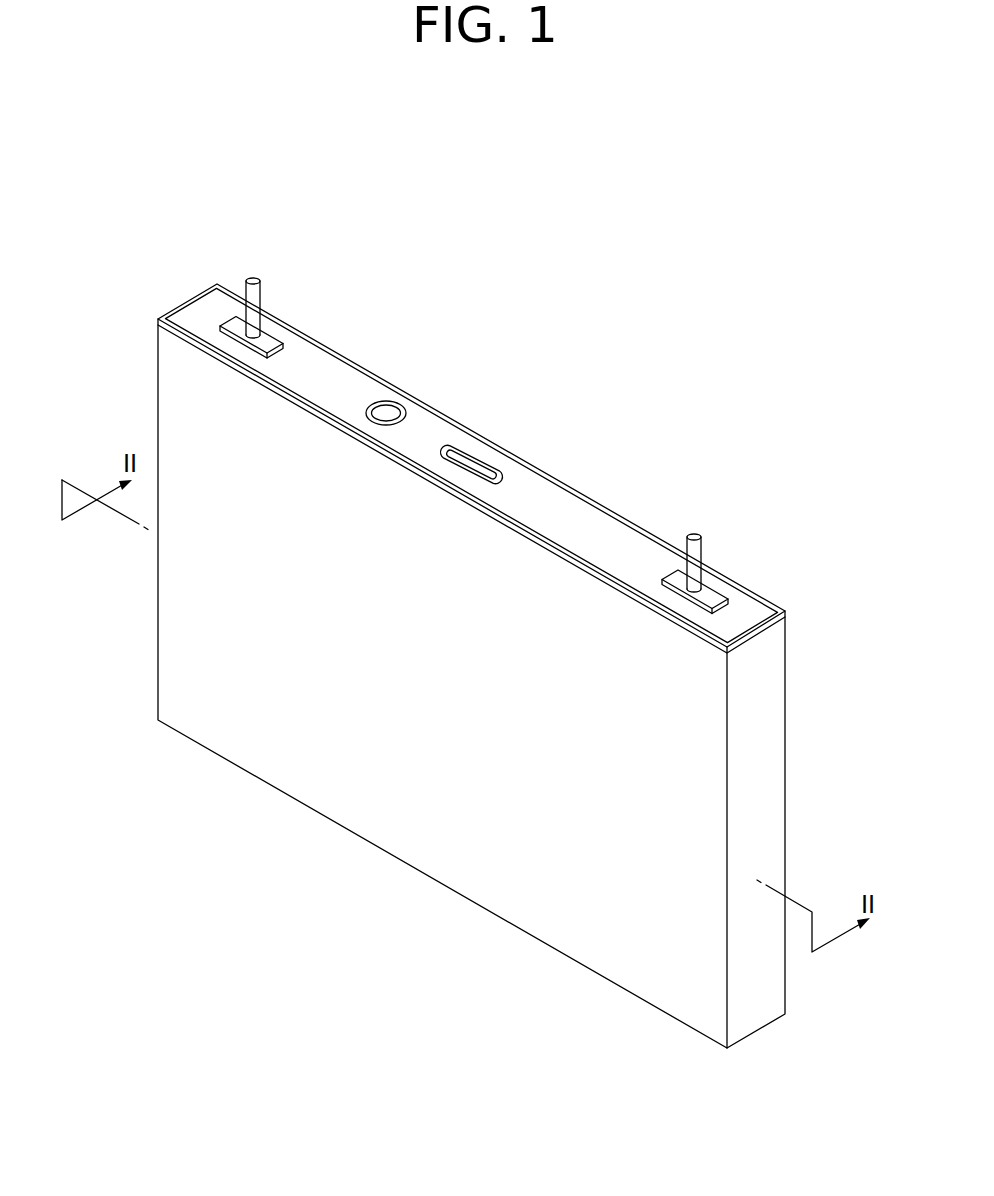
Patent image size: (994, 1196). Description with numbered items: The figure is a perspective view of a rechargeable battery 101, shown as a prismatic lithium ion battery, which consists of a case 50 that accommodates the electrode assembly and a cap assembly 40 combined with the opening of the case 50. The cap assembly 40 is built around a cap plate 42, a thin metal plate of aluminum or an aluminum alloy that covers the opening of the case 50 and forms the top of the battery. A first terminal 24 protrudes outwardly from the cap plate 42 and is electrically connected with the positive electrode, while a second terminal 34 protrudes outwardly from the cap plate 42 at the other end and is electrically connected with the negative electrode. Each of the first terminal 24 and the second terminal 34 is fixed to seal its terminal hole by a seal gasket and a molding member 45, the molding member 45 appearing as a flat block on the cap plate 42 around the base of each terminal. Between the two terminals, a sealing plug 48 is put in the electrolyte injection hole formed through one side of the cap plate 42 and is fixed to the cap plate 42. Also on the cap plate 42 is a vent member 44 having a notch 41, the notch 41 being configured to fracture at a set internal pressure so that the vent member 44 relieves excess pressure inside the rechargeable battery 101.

The rechargeable battery 101 is at (461, 245).
The case 50 is at (768, 596).
The cap assembly 40 is at (198, 299).
The cap plate 42 is at (425, 420).
The sealing plug 48 is at (387, 408).
The notch 41 is at (490, 467).
The vent member 44 is at (470, 448).
The molding member 45 is at (268, 338).
The second terminal 34 is at (254, 279).
The first terminal 24 is at (695, 534).